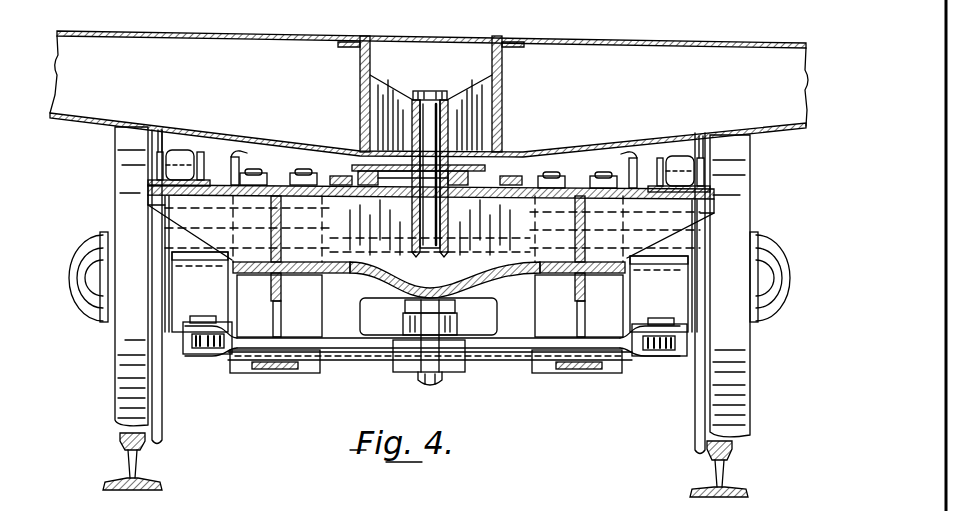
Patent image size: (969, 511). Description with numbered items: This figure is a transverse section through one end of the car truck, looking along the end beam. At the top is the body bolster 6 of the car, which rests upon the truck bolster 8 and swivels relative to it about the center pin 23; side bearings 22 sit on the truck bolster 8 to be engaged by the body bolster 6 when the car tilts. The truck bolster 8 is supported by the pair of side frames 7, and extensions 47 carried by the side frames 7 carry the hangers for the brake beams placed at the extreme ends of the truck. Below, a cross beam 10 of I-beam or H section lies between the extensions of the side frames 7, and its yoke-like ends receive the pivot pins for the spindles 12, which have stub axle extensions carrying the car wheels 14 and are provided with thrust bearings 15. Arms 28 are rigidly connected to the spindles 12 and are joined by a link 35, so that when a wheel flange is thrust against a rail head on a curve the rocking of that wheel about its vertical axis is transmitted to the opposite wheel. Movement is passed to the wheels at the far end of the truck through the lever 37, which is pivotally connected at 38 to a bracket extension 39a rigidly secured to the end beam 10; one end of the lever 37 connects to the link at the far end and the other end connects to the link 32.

The body bolster 6 is at (552, 57).
The center pin 23 is at (430, 125).
The truck bolster 8 is at (512, 190).
The side bearings 22 is at (185, 150).
The extensions 47 is at (240, 162).
The car wheels 14 is at (121, 178).
The thrust bearings 15 is at (190, 250).
The spindles 12 is at (431, 264).
The side frames 7 is at (300, 318).
The pivot 38 is at (410, 316).
The lever 37 is at (452, 316).
The link 32 is at (378, 349).
The cross beams 10 is at (490, 359).
The link 35 is at (614, 346).
The bracket extension 39a is at (402, 366).
The arms 28 is at (196, 343).